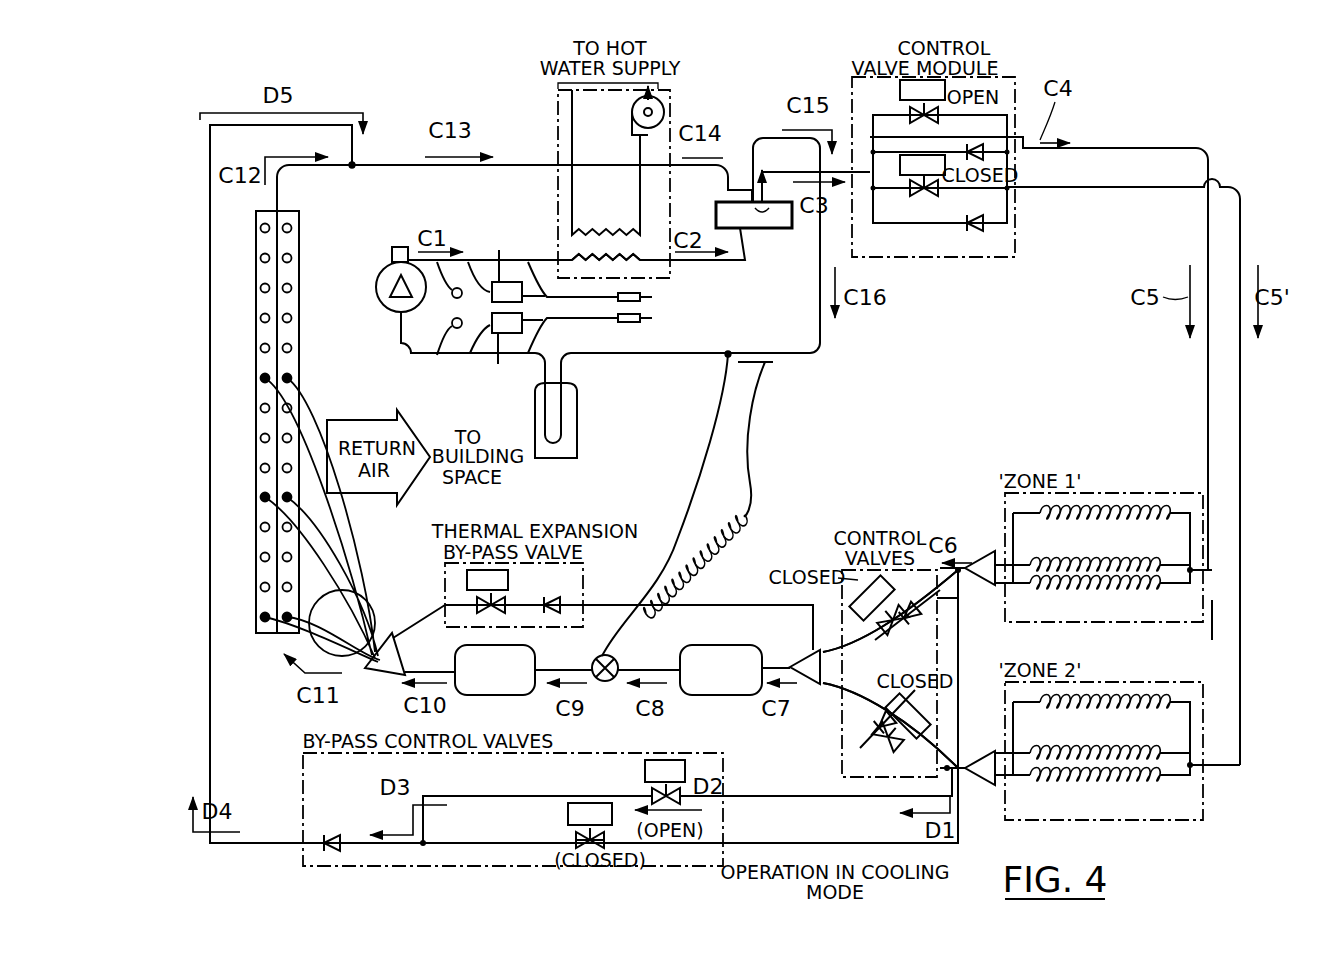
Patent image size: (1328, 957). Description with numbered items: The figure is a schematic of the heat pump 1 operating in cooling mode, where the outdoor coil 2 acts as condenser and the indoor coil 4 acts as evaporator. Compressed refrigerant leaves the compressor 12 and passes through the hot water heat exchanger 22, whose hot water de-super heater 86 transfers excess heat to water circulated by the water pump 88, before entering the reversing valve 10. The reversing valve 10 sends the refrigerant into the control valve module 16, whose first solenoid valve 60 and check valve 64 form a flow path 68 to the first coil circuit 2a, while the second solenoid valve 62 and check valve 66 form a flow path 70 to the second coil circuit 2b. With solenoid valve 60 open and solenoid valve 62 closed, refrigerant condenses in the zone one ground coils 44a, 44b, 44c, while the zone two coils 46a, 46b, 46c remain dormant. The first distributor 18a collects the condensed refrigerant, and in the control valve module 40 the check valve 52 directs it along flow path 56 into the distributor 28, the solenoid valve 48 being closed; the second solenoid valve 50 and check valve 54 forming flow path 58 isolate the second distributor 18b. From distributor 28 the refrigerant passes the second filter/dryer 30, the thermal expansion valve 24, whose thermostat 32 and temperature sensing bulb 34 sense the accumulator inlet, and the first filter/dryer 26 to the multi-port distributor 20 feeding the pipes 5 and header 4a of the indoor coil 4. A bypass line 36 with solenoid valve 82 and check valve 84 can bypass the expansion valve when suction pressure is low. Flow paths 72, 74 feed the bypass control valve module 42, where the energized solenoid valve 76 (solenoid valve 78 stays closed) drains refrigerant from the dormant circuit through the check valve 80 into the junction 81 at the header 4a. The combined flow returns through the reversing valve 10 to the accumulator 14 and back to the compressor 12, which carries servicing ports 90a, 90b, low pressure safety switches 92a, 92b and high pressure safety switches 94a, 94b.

The heat pump 1 is at (1194, 129).
The outdoor coil 2 is at (1200, 652).
The first coil circuit 2a is at (1135, 493).
The second coil circuit 2b is at (1128, 682).
The indoor coil 4 is at (243, 404).
The header 4a is at (300, 283).
The pipes 5 is at (362, 590).
The reversing valve 10 is at (777, 230).
The compressor 12 is at (383, 270).
The accumulator 14 is at (578, 418).
The control valve module 16 is at (1015, 243).
The first distributor 18a is at (988, 555).
The second distributor 18b is at (988, 752).
The multi-port distributor 20 is at (392, 640).
The hot water heat exchanger 22 is at (558, 112).
The thermal expansion valve 24 is at (618, 662).
The first filter/dryer 26 is at (535, 660).
The distributor 28 is at (803, 652).
The second filter/dryer 30 is at (715, 645).
The thermostat 32 is at (772, 362).
The temperature sensing bulb 34 is at (735, 352).
The bypass line 36 is at (732, 604).
The control valve module 40 is at (842, 776).
The bypass control valve module 42 is at (690, 753).
The ground coil 44a is at (1013, 540).
The ground coil 44b is at (1130, 563).
The ground coil 44c is at (1135, 585).
The coil 46a is at (1013, 725).
The coil 46b is at (1110, 750).
The coil 46c is at (1115, 778).
The first solenoid valve 48 is at (948, 598).
The second solenoid valve 50 is at (880, 712).
The check valve 52 is at (905, 630).
The check valve 54 is at (870, 740).
The flow path 56 is at (836, 646).
The flow path 58 is at (830, 688).
The first solenoid valve 60 is at (905, 113).
The second solenoid valve 62 is at (920, 193).
The check valve 64 is at (978, 150).
The check valve 66 is at (985, 222).
The flow path 68 is at (1082, 147).
The flow path 70 is at (1078, 187).
The flow path 72 is at (760, 840).
The flow path 74 is at (860, 797).
The solenoid valve 76 is at (648, 792).
The solenoid valve 78 is at (578, 838).
The check valve 80 is at (340, 836).
The junction 81 is at (354, 164).
The solenoid valve 82 is at (506, 601).
The check valve 84 is at (566, 600).
The hot water de-super heater 86 is at (618, 252).
The water pump 88 is at (631, 118).
The external servicing port 90a is at (652, 318).
The external servicing port 90b is at (652, 298).
The low pressure safety switch 92a is at (498, 334).
The low pressure safety switch 92b is at (501, 282).
The high pressure safety switch 94a is at (451, 323).
The high pressure safety switch 94b is at (459, 287).